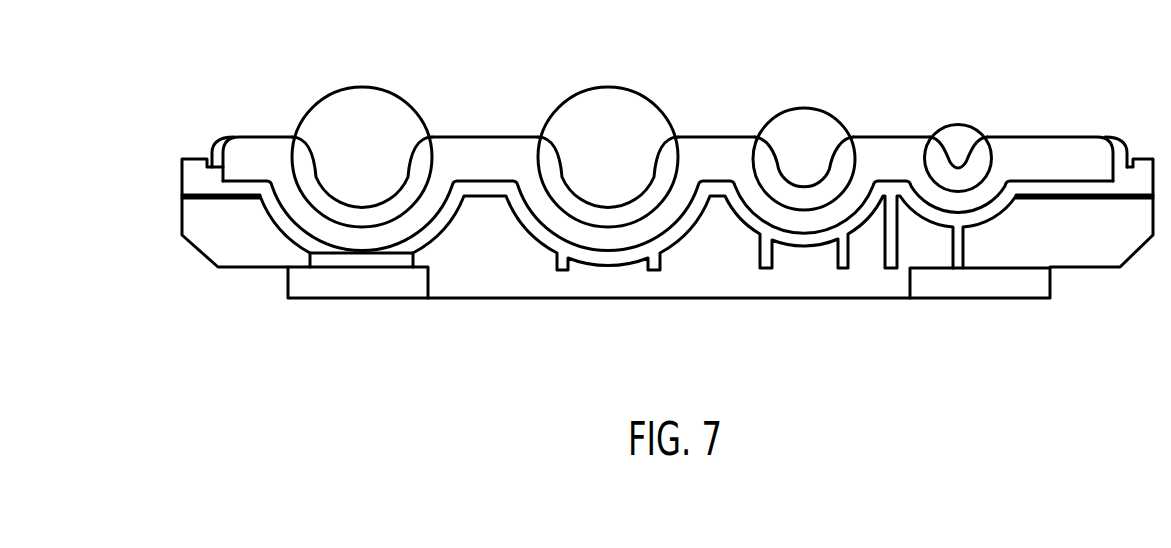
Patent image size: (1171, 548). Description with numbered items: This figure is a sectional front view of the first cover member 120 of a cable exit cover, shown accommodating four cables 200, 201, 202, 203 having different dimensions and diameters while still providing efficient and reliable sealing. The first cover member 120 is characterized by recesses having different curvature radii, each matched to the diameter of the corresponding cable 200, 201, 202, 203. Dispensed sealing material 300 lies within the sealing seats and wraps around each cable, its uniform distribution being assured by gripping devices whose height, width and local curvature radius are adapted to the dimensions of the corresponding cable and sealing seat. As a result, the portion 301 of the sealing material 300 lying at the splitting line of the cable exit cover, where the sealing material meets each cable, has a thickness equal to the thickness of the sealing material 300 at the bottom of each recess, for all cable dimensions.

The first cover member 120 is at (248, 239).
The cable 200 is at (381, 108).
The cable 201 is at (625, 108).
The cable 202 is at (816, 120).
The cable 203 is at (970, 128).
The dispensed sealing material 300 is at (498, 165).
The portion in correspondence to the splitting line 301 is at (283, 130).